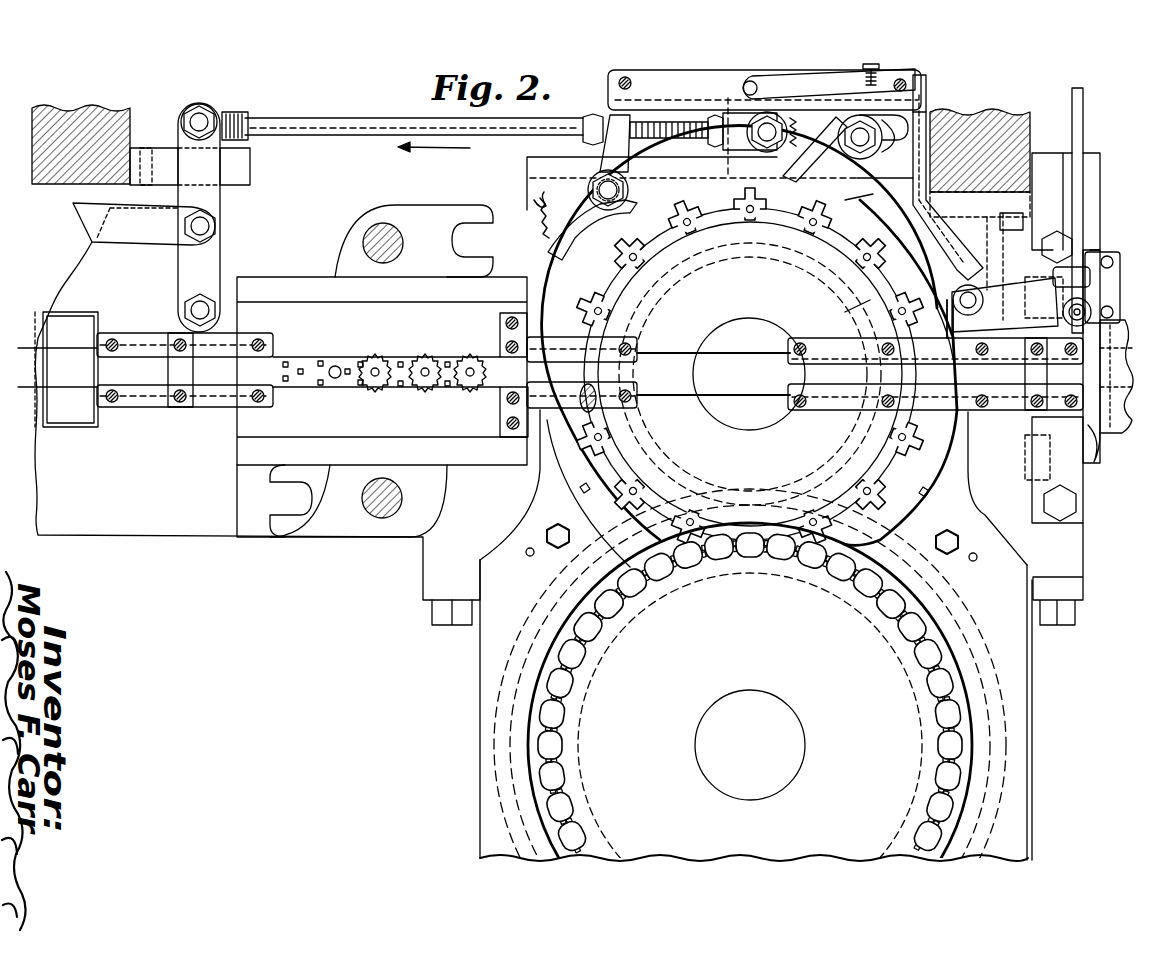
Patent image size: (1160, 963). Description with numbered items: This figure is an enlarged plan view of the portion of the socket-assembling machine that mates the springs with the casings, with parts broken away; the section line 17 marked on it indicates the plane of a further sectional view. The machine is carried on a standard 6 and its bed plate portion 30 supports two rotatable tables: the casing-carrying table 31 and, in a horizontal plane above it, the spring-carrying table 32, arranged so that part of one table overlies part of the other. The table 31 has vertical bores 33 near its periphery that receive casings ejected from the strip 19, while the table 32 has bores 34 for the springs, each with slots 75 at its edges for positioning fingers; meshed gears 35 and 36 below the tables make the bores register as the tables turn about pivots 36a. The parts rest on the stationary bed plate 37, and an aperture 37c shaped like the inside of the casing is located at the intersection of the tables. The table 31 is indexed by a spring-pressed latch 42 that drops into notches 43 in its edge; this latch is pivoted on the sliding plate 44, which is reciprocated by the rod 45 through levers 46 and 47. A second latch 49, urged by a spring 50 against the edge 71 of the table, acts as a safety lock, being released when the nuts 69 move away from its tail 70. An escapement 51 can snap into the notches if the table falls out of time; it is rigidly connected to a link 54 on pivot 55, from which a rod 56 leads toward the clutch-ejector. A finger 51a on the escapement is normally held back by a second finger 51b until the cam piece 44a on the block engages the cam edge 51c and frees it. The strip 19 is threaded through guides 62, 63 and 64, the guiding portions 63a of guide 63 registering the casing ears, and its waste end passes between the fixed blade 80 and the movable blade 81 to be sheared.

The standard 6 is at (240, 452).
The section line 17 is at (470, 412).
The strip 19 is at (66, 352).
The bed plate portion 30 is at (195, 528).
The casing-carrying table 31 is at (538, 476).
The spring-carrying table 32 is at (597, 747).
The vertical bores 33 is at (745, 228).
The vertical bores 34 is at (572, 660).
The gear 35 is at (977, 627).
The gear 36 is at (822, 467).
The pivot 36a is at (757, 326).
The stationary bed plate 37 is at (485, 769).
The aperture 37c is at (848, 313).
The spring-pressed latch 42 is at (833, 152).
The notches 43 is at (866, 203).
The sliding plate 44 is at (722, 155).
The cam piece 44a is at (948, 112).
The rod 45 is at (357, 115).
The lever 46 is at (213, 200).
The lever 47 is at (150, 233).
The second latch 49 is at (590, 198).
The spring 50 is at (545, 212).
The escapement 51 is at (973, 255).
The finger 51a is at (922, 110).
The second finger 51b is at (908, 96).
The cam edge 51c is at (897, 142).
The link 54 is at (1015, 290).
The pivot 55 is at (966, 314).
The rod 56 is at (1084, 131).
The guide 62 is at (150, 395).
The guide 63 is at (640, 341).
The guiding portions 63a is at (590, 392).
The guide 64 is at (850, 402).
The nuts 69 is at (591, 117).
The tail 70 is at (624, 152).
The edge 71 is at (566, 265).
The slots 75 is at (570, 824).
The fixed blade 80 is at (1092, 465).
The movable blade 81 is at (1105, 442).